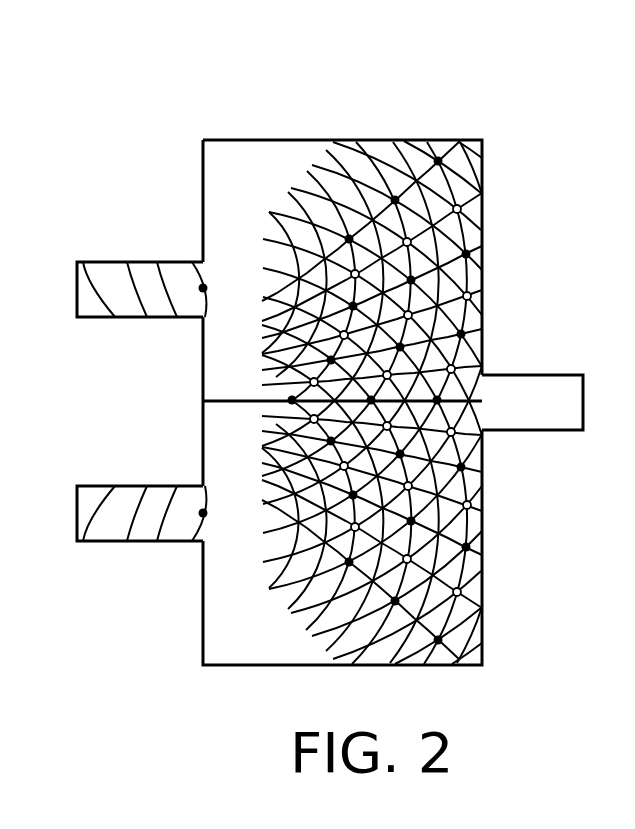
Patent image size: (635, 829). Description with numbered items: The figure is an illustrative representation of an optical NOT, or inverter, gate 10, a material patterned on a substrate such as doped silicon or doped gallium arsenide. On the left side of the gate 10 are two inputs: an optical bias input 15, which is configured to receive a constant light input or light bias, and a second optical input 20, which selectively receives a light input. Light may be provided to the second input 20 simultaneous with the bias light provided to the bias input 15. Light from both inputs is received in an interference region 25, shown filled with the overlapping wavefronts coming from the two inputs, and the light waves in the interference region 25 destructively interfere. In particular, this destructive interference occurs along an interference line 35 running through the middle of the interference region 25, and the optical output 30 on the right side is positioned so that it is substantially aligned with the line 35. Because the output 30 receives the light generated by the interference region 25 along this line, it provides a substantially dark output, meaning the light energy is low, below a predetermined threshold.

The inverter gate 10 is at (471, 98).
The optical bias input 15 is at (128, 262).
The second optical input 20 is at (130, 485).
The interference region 25 is at (435, 665).
The optical output 30 is at (545, 375).
The interference line 35 is at (245, 400).